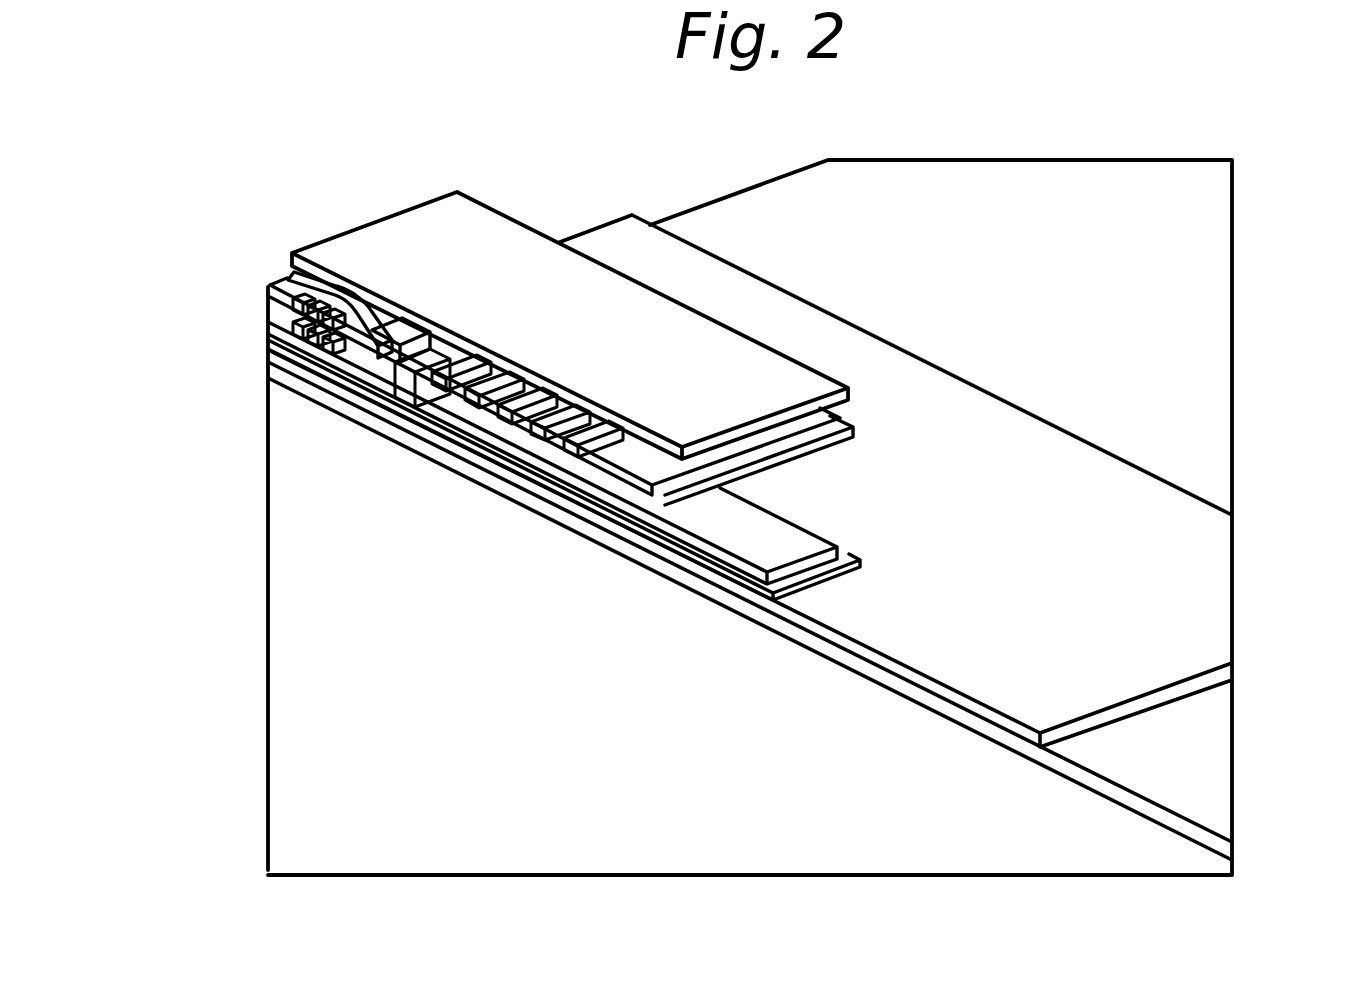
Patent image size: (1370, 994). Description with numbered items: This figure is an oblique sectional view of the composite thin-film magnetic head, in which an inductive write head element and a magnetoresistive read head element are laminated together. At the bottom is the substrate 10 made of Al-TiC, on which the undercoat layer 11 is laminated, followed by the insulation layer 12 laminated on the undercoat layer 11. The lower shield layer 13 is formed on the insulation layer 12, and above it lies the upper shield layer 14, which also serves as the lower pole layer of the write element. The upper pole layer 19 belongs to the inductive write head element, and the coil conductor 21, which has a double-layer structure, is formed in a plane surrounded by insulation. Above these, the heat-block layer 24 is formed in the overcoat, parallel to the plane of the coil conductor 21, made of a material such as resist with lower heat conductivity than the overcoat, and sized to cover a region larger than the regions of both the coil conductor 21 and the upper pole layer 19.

The substrate 10 is at (300, 547).
The undercoat layer 11 is at (1203, 756).
The insulation layer 12 is at (1203, 628).
The lower shield layer 13 is at (291, 353).
The upper shield layer 14 is at (286, 333).
The upper pole layer 19 is at (285, 284).
The coil conductor 21 is at (447, 410).
The heat-block layer 24 is at (396, 238).